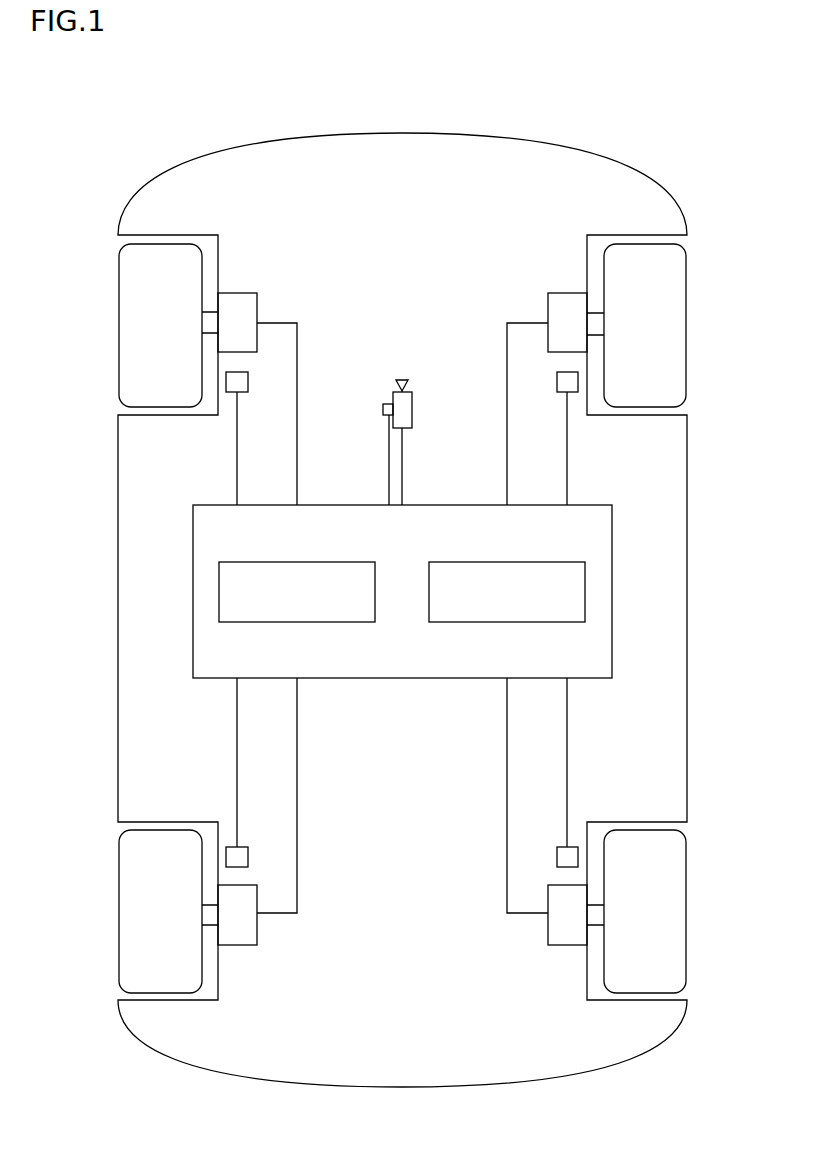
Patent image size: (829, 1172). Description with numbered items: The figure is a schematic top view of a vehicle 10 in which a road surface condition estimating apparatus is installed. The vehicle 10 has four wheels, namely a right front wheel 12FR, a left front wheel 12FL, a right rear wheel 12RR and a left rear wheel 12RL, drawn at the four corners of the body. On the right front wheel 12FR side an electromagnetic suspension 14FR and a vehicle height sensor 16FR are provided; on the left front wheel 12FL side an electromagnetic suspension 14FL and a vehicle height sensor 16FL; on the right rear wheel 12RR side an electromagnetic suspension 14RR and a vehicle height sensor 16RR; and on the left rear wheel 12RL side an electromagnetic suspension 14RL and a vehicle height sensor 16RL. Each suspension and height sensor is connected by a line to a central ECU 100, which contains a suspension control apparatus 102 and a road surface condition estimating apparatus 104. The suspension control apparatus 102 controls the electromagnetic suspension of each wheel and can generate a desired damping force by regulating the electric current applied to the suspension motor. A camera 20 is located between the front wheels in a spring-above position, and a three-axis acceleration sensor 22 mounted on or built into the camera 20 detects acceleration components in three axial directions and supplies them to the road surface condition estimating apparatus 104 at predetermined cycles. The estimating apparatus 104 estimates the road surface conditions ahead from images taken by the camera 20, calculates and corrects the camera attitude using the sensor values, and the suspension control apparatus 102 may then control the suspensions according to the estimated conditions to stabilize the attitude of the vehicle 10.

The vehicle 10 is at (636, 150).
The left front wheel 12FL is at (130, 334).
The right front wheel 12FR is at (675, 334).
The left rear wheel 12RL is at (130, 920).
The right rear wheel 12RR is at (675, 921).
The electromagnetic suspension 14FL is at (237, 307).
The electromagnetic suspension 14FR is at (568, 307).
The electromagnetic suspension 14RL is at (237, 930).
The electromagnetic suspension 14RR is at (566, 930).
The vehicle height sensor 16FL is at (240, 395).
The vehicle height sensor 16FR is at (562, 395).
The vehicle height sensor 16RL is at (240, 850).
The vehicle height sensor 16RR is at (563, 848).
The camera 20 is at (412, 408).
The 3-axis acceleration sensor 22 is at (383, 408).
The ECU 100 is at (400, 682).
The suspension control apparatus 102 is at (297, 562).
The road surface condition estimating apparatus 104 is at (507, 562).